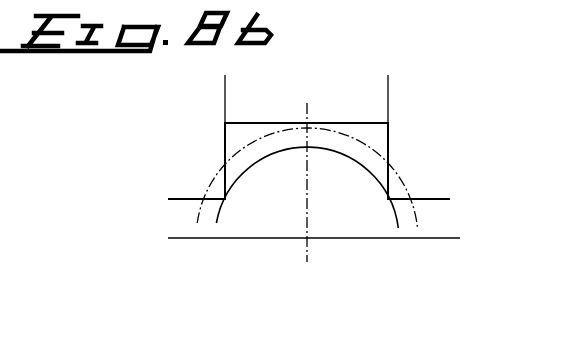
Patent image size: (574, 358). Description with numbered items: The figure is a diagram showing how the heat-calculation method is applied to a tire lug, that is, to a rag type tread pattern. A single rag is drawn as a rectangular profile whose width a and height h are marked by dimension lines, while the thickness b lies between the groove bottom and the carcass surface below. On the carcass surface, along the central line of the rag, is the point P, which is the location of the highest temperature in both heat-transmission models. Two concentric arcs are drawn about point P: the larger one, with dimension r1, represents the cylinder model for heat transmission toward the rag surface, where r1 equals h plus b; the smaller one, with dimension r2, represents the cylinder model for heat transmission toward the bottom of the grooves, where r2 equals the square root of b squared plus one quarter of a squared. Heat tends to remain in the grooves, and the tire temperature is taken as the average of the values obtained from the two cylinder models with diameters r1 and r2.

The rag width a is at (387, 87).
The rag height h is at (428, 124).
The base rubber thickness b is at (428, 262).
The diameter of cylinder model for heat transmission toward rag surface r1 is at (358, 140).
The diameter of cylinder model for heat transmission toward groove bottom r2 is at (307, 239).
The highest temperature point P is at (315, 183).